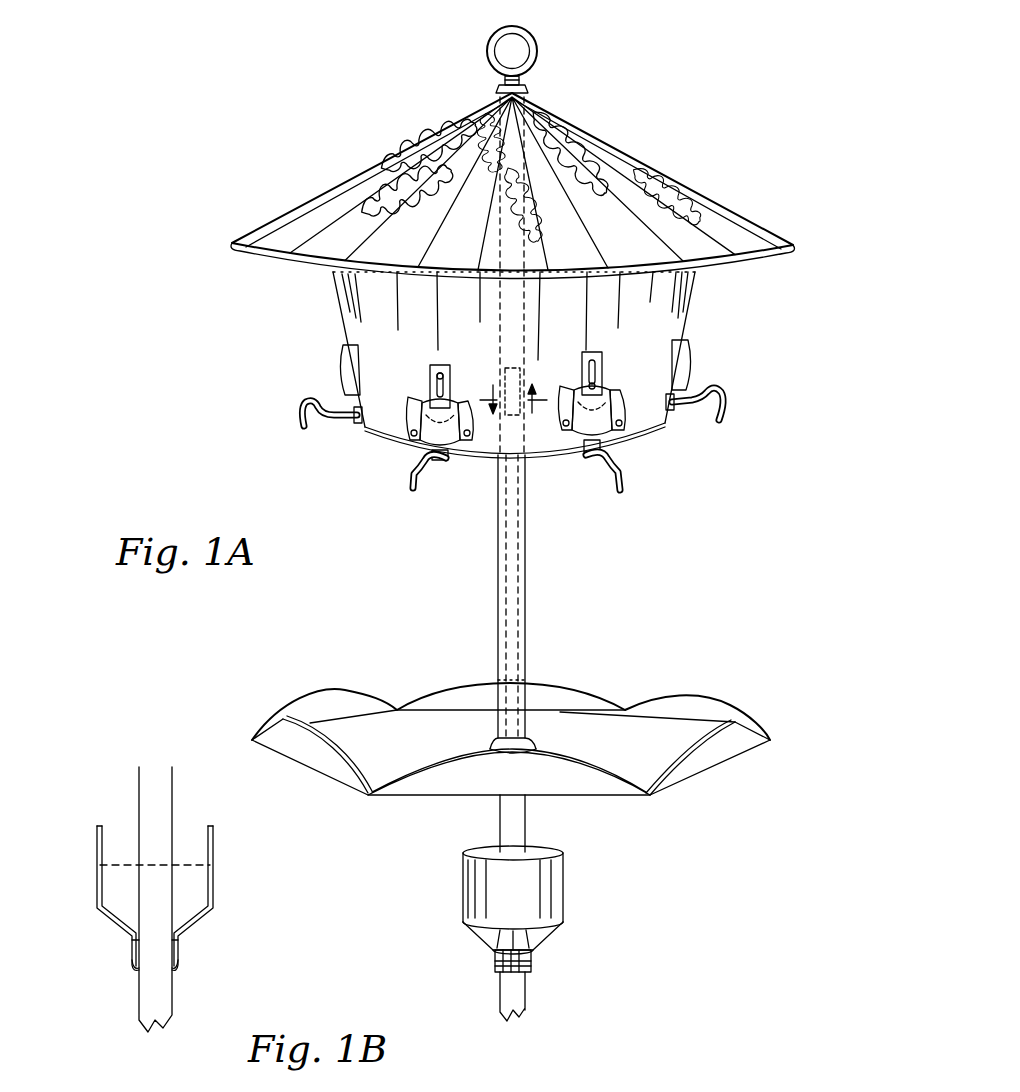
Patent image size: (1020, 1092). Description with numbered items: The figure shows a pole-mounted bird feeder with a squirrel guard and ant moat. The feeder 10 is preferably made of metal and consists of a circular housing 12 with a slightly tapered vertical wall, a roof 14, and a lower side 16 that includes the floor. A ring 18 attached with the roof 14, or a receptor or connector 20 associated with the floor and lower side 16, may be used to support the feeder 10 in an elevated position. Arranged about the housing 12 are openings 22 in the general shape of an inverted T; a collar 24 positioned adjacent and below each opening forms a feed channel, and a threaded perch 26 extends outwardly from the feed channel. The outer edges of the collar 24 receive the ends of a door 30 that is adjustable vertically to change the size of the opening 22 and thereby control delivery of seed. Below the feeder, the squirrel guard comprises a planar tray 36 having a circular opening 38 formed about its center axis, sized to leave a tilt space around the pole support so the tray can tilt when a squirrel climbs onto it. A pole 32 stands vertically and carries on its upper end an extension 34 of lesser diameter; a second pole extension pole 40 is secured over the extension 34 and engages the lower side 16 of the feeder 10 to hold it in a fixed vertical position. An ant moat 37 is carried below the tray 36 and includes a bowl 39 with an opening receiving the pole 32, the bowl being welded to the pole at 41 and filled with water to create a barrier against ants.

In FIG. 1A, the feeder 10 is at (762, 128).
In FIG. 1A, the circular housing 12 is at (548, 329).
In FIG. 1A, the roof 14 is at (634, 156).
In FIG. 1A, the lower side 16 is at (371, 438).
In FIG. 1A, the ring 18 is at (537, 54).
In FIG. 1A, the receptor or connector 20 is at (487, 286).
In FIG. 1A, the openings 22 is at (440, 364).
In FIG. 1A, the collar 24 is at (580, 462).
In FIG. 1A, the threaded perch 26 is at (706, 400).
In FIG. 1A, the door 30 is at (615, 382).
In FIG. 1A, the pole 32 is at (494, 822).
In FIG. 1B, the pole 32 is at (136, 1000).
In FIG. 1A, the extension 34 is at (512, 686).
In FIG. 1A, the planar tray 36 is at (608, 759).
In FIG. 1A, the ant moat 37 is at (549, 893).
In FIG. 1B, the ant moat 37 is at (218, 885).
In FIG. 1A, the circular opening 38 is at (548, 722).
In FIG. 1B, the bowl 39 is at (158, 958).
In FIG. 1A, the second pole extension pole 40 is at (527, 571).
In FIG. 1B, the weld 41 is at (176, 972).